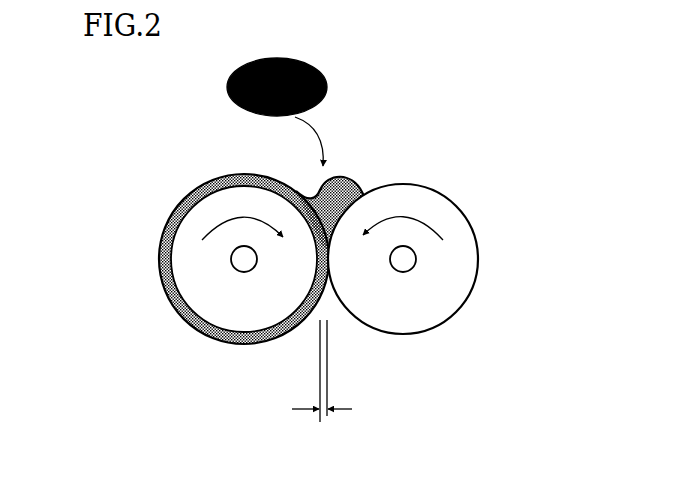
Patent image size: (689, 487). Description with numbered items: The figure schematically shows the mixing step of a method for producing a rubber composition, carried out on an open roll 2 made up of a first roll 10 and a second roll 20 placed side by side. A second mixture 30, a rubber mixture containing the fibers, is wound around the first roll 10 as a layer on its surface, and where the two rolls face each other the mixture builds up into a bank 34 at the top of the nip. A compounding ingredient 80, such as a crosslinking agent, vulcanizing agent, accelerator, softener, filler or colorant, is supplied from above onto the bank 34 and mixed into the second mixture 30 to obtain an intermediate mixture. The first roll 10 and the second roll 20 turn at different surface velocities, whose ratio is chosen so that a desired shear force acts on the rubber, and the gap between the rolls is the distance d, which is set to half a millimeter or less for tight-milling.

The open roll 2 is at (311, 256).
The first roll 10 is at (237, 320).
The second roll 20 is at (412, 323).
The second mixture 30 is at (205, 187).
The bank 34 is at (345, 179).
The compounding ingredient 80 is at (248, 110).
The distance between the first roll and the second roll d is at (327, 414).